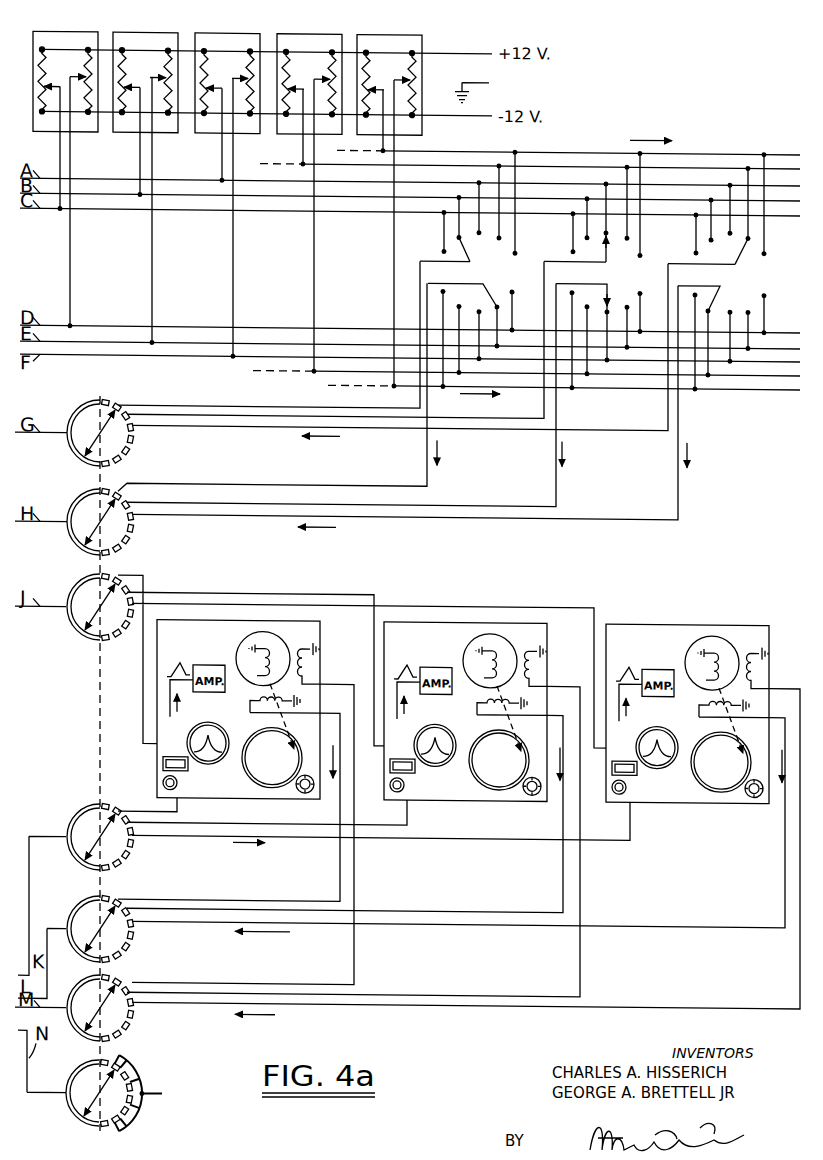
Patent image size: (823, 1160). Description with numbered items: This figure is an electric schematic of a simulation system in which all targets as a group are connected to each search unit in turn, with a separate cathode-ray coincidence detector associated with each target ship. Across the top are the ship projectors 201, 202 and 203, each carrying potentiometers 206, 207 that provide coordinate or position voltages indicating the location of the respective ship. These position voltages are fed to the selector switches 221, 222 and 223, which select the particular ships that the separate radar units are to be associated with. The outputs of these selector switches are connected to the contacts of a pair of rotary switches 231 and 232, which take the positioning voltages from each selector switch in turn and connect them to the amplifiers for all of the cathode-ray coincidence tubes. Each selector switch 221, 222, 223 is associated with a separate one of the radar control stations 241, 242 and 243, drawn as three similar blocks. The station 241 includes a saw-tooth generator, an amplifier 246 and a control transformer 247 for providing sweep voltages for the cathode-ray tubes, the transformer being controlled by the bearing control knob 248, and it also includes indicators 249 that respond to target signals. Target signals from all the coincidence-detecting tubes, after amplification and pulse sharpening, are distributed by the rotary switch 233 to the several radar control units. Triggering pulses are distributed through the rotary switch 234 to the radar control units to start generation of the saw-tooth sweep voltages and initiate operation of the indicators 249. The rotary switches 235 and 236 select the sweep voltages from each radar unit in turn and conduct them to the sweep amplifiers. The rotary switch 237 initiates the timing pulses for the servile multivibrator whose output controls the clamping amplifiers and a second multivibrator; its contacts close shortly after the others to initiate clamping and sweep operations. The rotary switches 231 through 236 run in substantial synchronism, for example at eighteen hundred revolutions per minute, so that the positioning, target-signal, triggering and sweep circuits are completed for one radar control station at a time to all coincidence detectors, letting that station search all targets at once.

The ship projector 201 is at (40, 32).
The ship projector 202 is at (125, 32).
The ship projector 203 is at (206, 32).
The potentiometer 206 is at (61, 60).
The potentiometer 207 is at (92, 97).
The selector switch 221 is at (469, 269).
The selector switch 222 is at (594, 270).
The selector switch 223 is at (717, 271).
The rotary switch 231 is at (120, 436).
The rotary switch 232 is at (118, 525).
The rotary switch 233 is at (82, 618).
The rotary switch 234 is at (124, 845).
The rotary switch 235 is at (124, 930).
The rotary switch 236 is at (113, 1010).
The rotary switch 237 is at (78, 1103).
The radar control station 241 is at (245, 692).
The radar control station 242 is at (472, 687).
The radar control station 243 is at (694, 700).
The amplifier 246 is at (202, 662).
The control transformer 247 is at (276, 645).
The bearing control knob 248 is at (295, 797).
The indicator 249 is at (250, 759).